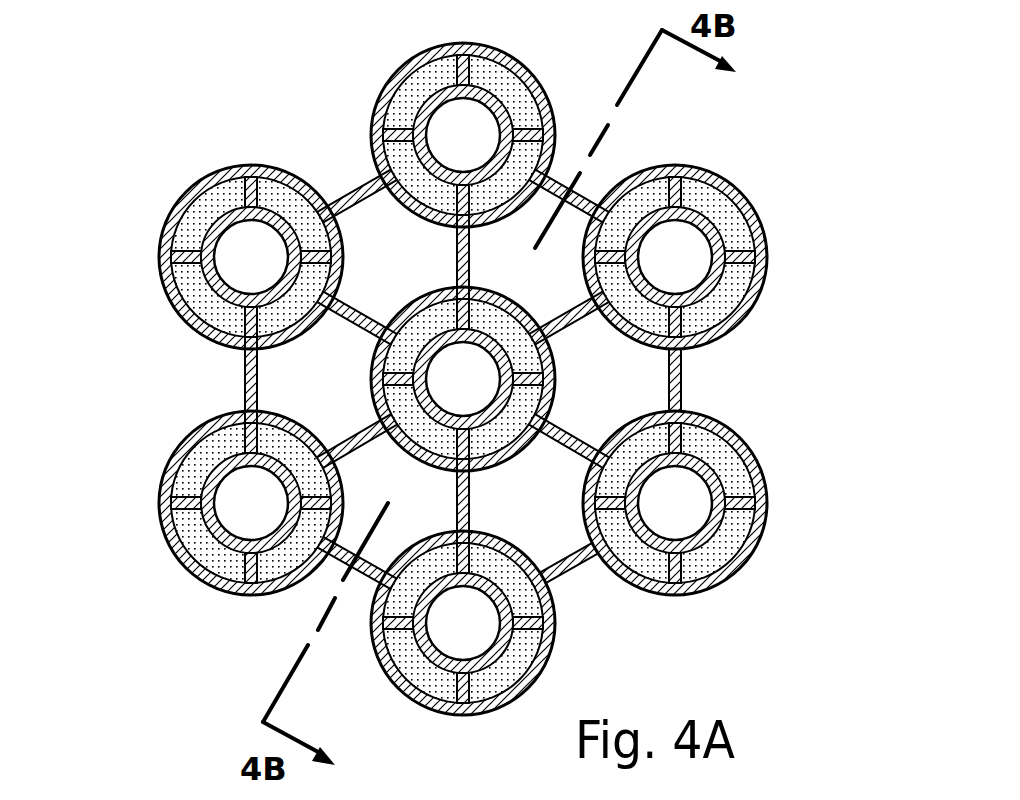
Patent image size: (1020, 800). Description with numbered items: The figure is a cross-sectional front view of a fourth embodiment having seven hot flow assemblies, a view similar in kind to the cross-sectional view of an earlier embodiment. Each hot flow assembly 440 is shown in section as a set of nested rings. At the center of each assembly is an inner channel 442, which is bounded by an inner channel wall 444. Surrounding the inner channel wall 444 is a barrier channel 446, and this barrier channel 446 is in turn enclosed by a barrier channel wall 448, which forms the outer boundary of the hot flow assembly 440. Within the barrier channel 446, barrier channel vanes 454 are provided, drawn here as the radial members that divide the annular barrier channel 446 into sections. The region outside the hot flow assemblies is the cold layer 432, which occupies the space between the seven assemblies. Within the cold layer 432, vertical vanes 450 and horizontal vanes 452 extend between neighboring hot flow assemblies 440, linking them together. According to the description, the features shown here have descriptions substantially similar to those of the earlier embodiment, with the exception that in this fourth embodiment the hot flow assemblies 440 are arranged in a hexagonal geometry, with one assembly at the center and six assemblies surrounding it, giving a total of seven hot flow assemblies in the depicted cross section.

The cold layer 432 is at (416, 379).
The hot flow assembly 440 is at (194, 503).
The inner channel 442 is at (233, 518).
The inner channel wall 444 is at (232, 553).
The barrier channel 446 is at (187, 473).
The barrier channel wall 448 is at (160, 535).
The vertical vanes 450 is at (683, 383).
The horizontal vanes 452 is at (567, 570).
The barrier channel vanes 454 is at (222, 436).